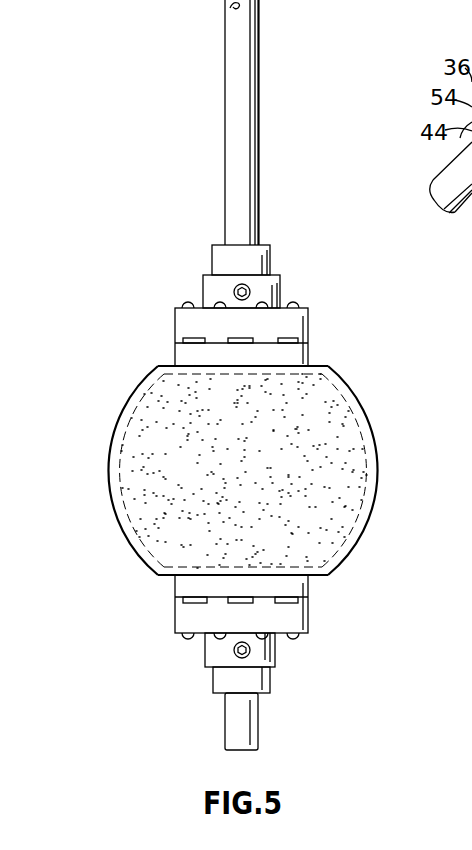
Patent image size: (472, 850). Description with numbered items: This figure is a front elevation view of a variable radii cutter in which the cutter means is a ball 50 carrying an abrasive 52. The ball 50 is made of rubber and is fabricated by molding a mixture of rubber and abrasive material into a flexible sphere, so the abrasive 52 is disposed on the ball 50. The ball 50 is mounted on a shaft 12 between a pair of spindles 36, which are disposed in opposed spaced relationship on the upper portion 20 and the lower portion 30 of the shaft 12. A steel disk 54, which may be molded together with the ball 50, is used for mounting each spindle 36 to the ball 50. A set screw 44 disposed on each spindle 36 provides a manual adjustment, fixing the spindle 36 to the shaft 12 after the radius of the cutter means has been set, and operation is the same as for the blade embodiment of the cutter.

The shaft 12 is at (259, 53).
The upper portion 20 is at (233, 6).
The lower portion 30 is at (224, 735).
The spindle 36 is at (309, 318).
The set screw 44 is at (233, 293).
The ball 50 is at (109, 485).
The abrasive 52 is at (309, 470).
The disk 54 is at (194, 359).